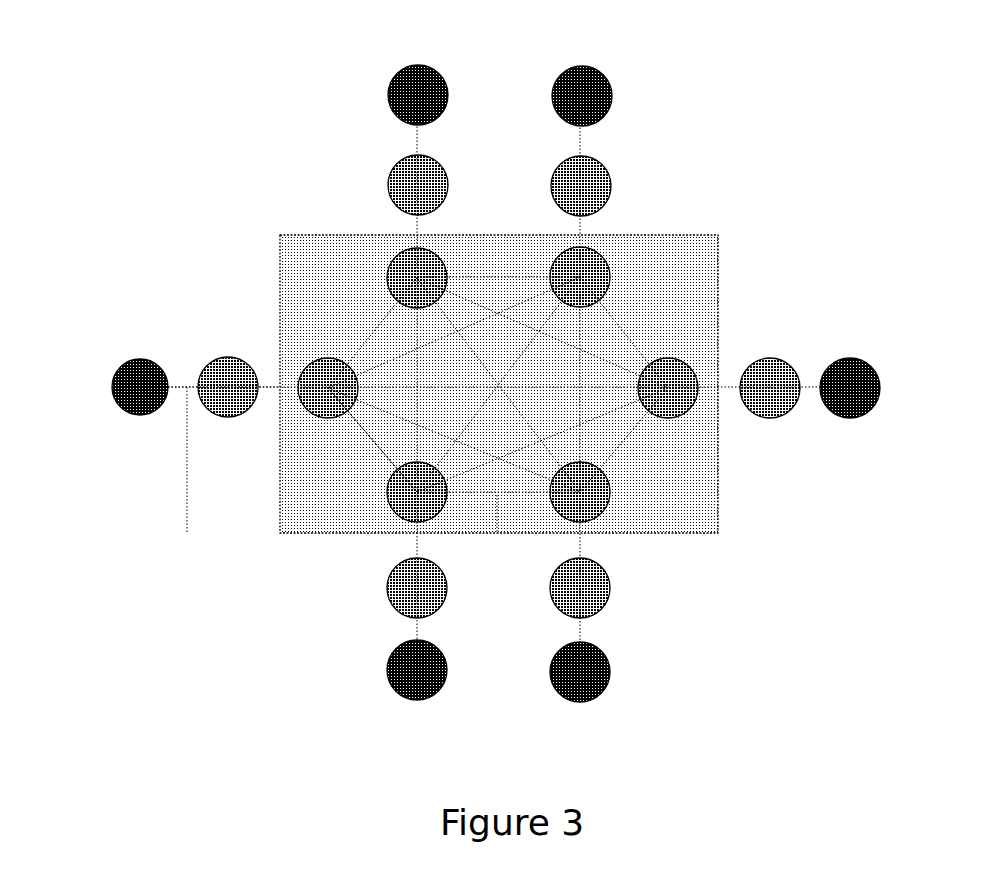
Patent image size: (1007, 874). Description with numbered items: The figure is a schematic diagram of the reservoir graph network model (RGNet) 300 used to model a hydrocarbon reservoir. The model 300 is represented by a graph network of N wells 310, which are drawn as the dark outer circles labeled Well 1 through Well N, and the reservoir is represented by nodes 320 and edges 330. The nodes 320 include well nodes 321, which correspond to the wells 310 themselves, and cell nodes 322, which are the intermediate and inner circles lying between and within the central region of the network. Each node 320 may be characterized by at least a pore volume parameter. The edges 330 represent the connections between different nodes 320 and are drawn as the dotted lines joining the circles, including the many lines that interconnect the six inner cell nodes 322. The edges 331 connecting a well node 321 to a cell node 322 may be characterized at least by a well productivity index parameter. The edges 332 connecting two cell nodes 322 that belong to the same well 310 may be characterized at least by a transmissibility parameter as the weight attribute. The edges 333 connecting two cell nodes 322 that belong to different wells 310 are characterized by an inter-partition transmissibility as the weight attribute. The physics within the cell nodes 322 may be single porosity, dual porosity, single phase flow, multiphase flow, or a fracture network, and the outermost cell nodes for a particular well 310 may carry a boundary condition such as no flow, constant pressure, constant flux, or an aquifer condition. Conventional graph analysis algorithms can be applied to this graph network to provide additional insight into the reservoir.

The reservoir graph network model 300 is at (198, 99).
The well 310 is at (348, 78).
The node 320 is at (115, 367).
The well node 321 is at (112, 400).
The cell node 322 is at (323, 417).
The edge 330 is at (370, 447).
The edge connecting a well node to a cell node 331 is at (413, 630).
The edge connecting two cell nodes of the same well 332 is at (277, 385).
The edge connecting cell nodes of different wells 333 is at (388, 458).